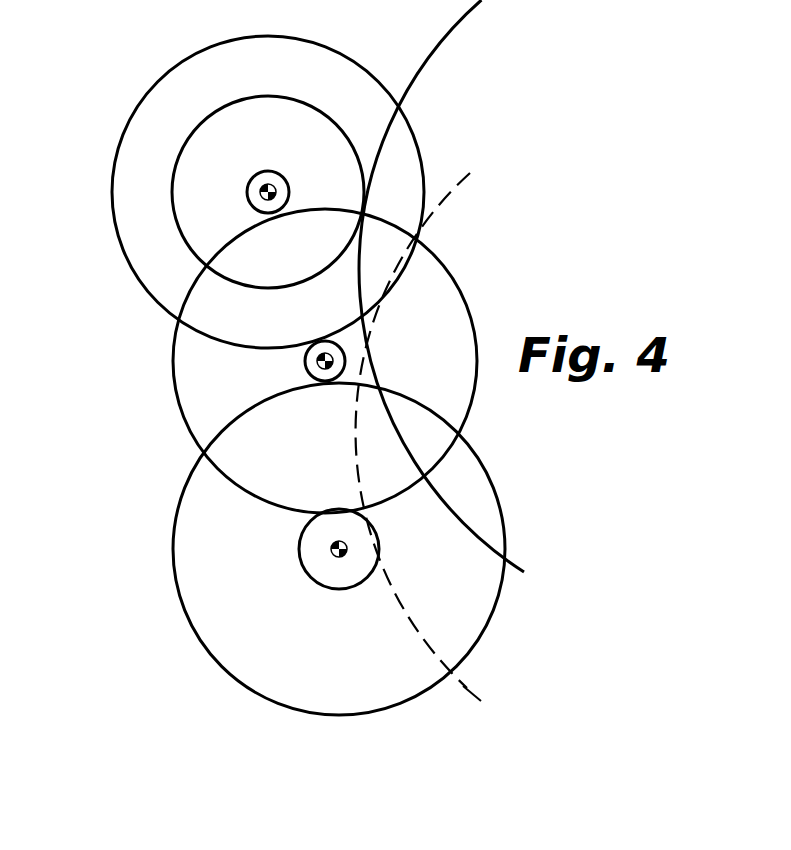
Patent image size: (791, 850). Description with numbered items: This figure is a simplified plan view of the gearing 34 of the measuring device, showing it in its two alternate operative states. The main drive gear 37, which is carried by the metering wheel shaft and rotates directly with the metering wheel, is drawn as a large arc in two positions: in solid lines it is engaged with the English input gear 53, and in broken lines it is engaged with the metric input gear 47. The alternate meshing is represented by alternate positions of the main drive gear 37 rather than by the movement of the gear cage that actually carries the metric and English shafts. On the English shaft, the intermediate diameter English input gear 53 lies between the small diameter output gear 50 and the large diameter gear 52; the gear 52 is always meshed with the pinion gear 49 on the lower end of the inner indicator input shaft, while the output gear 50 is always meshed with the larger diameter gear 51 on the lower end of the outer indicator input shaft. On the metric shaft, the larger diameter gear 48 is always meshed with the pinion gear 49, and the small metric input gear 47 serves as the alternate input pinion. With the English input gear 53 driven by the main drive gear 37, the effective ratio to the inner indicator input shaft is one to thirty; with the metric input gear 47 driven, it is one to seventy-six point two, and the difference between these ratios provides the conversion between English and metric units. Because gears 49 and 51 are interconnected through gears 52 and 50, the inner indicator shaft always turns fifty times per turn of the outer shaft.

The gearing 34 is at (95, 267).
The main drive gear 37 is at (434, 45).
The metric input gear 47 is at (326, 587).
The larger diameter gear 48 is at (206, 643).
The pinion gear 49 is at (307, 367).
The small diameter output gear 50 is at (322, 147).
The larger diameter gear 51 is at (194, 441).
The large diameter gear 52 is at (157, 305).
The English input gear 53 is at (186, 142).